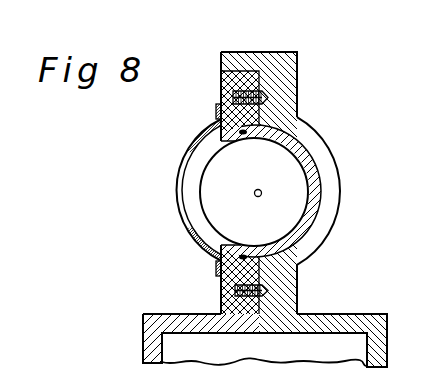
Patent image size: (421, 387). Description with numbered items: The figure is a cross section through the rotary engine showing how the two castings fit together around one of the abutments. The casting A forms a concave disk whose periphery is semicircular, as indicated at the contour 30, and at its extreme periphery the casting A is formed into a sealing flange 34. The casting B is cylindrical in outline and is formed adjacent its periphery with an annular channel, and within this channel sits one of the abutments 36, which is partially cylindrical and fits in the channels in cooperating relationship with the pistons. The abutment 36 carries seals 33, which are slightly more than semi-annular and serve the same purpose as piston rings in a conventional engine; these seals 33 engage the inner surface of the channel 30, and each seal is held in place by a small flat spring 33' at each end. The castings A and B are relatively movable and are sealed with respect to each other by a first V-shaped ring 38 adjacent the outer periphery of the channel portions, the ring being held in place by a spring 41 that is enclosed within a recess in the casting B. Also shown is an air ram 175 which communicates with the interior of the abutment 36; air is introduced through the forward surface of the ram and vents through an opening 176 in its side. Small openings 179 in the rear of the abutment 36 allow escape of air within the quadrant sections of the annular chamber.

The casting A is at (297, 87).
The casting B is at (157, 314).
The semicircular periphery contour 30 is at (340, 178).
The seals 33 is at (281, 191).
The small flat spring 33' is at (243, 195).
The sealing flange 34 is at (251, 52).
The abutments 36 is at (290, 172).
The first V-shaped ring 38 is at (223, 288).
The spring 41 is at (270, 282).
The air ram 175 is at (178, 146).
The opening 176 is at (177, 193).
The small openings 179 is at (256, 196).